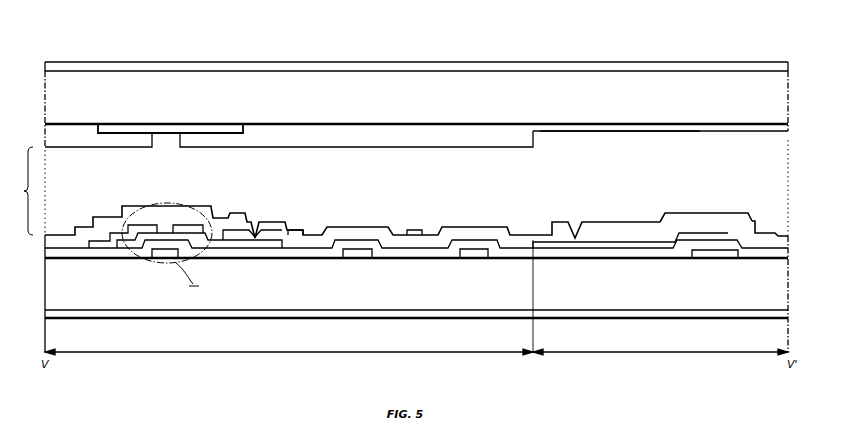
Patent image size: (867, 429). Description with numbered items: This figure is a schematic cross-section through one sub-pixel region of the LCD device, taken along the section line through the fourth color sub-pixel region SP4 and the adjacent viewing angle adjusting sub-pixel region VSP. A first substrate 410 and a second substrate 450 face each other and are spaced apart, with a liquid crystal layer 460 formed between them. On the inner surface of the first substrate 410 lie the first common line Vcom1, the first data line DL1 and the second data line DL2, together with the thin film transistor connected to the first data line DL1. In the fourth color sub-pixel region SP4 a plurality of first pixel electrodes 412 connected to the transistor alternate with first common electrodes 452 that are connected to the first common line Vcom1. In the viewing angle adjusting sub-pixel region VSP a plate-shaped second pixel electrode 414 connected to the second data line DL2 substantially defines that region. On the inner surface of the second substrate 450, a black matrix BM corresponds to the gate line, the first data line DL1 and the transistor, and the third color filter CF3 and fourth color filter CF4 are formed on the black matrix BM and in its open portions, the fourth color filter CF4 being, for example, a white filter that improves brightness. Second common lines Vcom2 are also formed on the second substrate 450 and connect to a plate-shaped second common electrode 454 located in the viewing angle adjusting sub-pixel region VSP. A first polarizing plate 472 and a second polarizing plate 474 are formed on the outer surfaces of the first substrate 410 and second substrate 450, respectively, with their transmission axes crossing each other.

The second polarizing plate 474 is at (198, 63).
The second substrate 450 is at (775, 106).
The black matrix BM is at (218, 125).
The third color filter CF3 is at (130, 146).
The fourth color filter CF4 is at (404, 140).
The second common electrode 454 is at (667, 129).
The second common line Vcom2 is at (569, 129).
The liquid crystal layer 460 is at (18, 191).
The first substrate 410 is at (773, 295).
The first polarizing plate 472 is at (117, 320).
The first data line DL1 is at (110, 216).
The second data line DL2 is at (606, 251).
The first pixel electrode 412 is at (291, 225).
The second pixel electrode 414 is at (716, 212).
The first common electrode 452 is at (357, 259).
The first common line Vcom1 is at (705, 259).
The fourth color sub-pixel region SP4 is at (289, 346).
The viewing angle adjusting sub-pixel region VSP is at (660, 346).